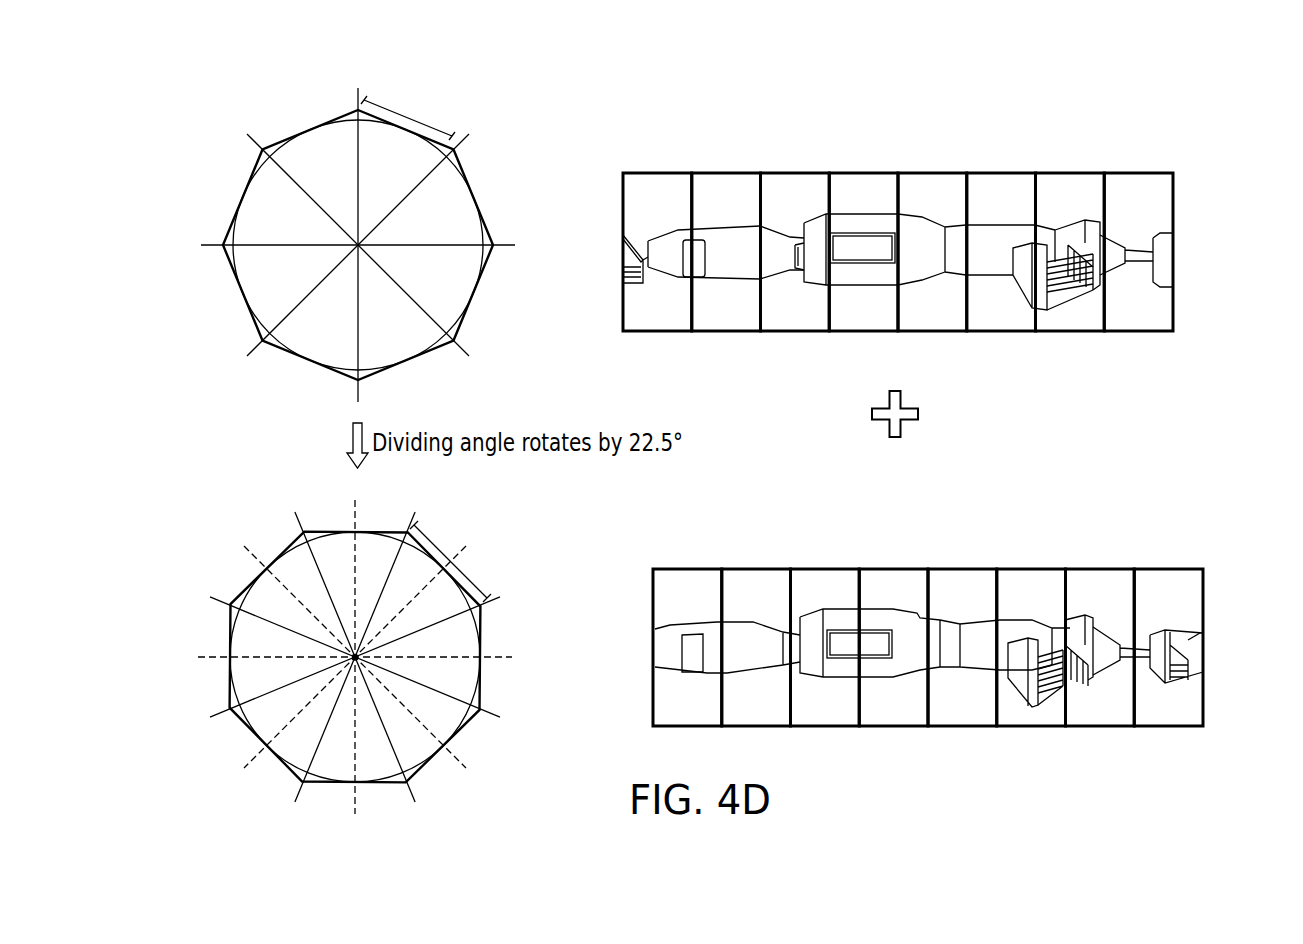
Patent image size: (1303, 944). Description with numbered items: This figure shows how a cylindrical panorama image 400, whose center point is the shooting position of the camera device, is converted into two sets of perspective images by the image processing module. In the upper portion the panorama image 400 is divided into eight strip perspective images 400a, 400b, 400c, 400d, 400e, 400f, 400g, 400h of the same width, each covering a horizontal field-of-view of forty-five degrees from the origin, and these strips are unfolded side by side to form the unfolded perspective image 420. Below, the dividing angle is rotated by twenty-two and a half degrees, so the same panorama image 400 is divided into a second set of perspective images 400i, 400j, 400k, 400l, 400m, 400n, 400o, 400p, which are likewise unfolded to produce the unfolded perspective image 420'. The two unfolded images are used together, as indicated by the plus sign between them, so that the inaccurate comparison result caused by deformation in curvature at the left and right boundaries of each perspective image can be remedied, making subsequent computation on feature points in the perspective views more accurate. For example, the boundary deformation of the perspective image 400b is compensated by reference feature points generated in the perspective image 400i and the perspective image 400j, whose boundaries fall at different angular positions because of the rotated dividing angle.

The panorama image 400 is at (347, 117).
The strip perspective image 400a is at (438, 133).
The strip perspective image 400b is at (460, 168).
The strip perspective image 400c is at (463, 327).
The strip perspective image 400d is at (438, 347).
The strip perspective image 400e is at (273, 343).
The strip perspective image 400f is at (255, 323).
The strip perspective image 400g is at (258, 165).
The strip perspective image 400h is at (275, 147).
The perspective image 400i is at (473, 595).
The perspective image 400j is at (480, 627).
The perspective image 400k is at (420, 768).
The perspective image 400l is at (387, 782).
The perspective image 400m is at (285, 768).
The perspective image 400n is at (228, 690).
The perspective image 400o is at (240, 592).
The perspective image 400p is at (390, 532).
The unfolded perspective image 420 is at (931, 262).
The unfolded perspective image 420' is at (965, 658).